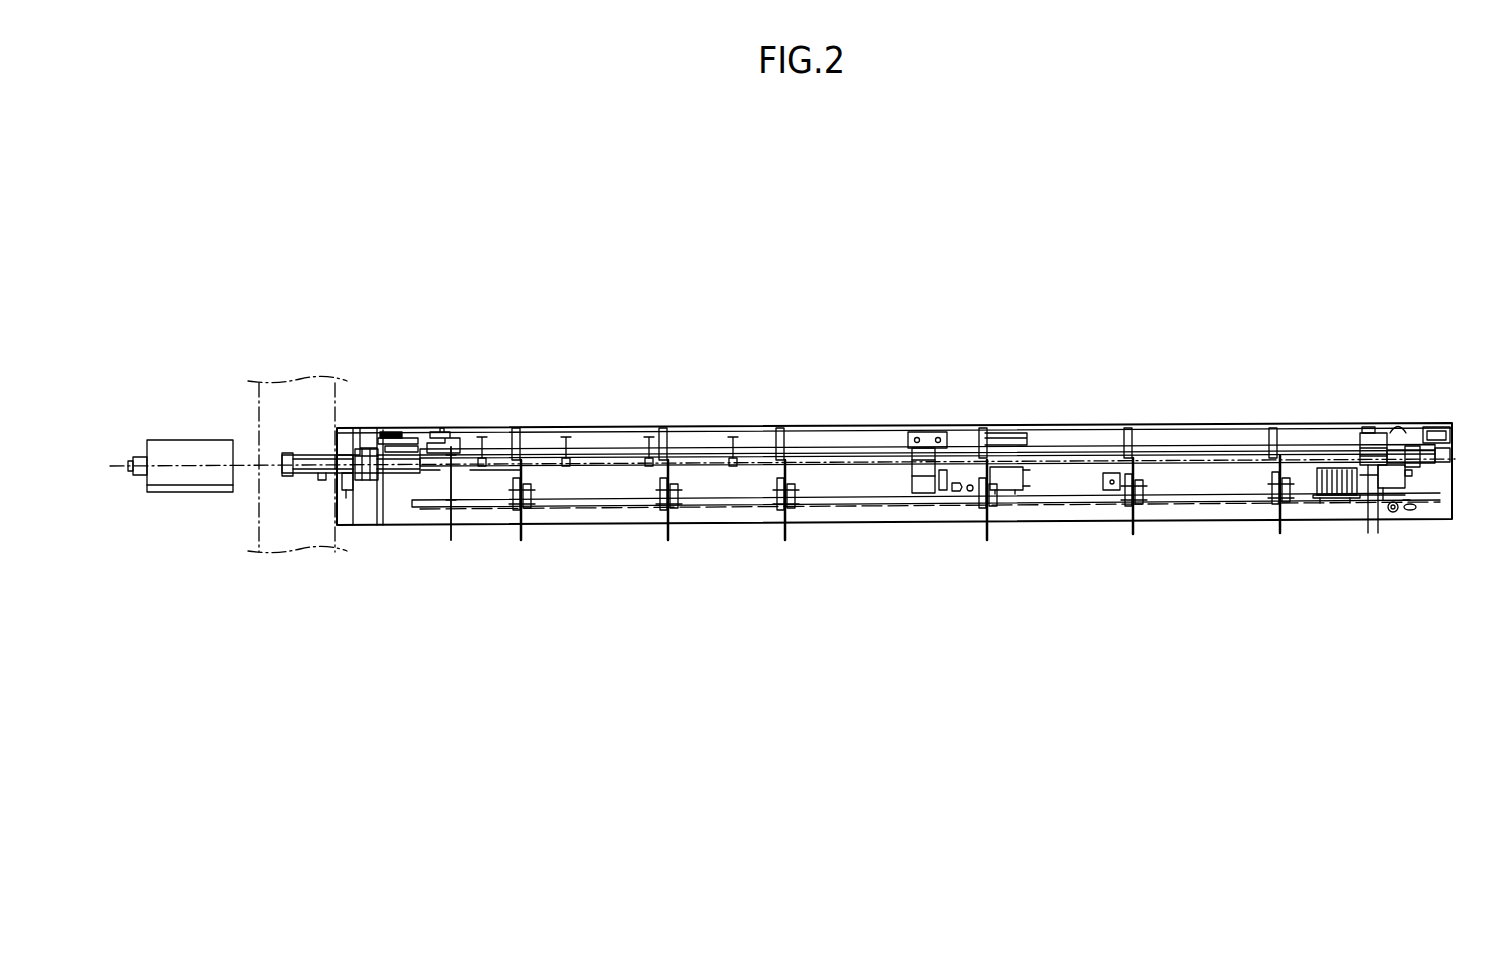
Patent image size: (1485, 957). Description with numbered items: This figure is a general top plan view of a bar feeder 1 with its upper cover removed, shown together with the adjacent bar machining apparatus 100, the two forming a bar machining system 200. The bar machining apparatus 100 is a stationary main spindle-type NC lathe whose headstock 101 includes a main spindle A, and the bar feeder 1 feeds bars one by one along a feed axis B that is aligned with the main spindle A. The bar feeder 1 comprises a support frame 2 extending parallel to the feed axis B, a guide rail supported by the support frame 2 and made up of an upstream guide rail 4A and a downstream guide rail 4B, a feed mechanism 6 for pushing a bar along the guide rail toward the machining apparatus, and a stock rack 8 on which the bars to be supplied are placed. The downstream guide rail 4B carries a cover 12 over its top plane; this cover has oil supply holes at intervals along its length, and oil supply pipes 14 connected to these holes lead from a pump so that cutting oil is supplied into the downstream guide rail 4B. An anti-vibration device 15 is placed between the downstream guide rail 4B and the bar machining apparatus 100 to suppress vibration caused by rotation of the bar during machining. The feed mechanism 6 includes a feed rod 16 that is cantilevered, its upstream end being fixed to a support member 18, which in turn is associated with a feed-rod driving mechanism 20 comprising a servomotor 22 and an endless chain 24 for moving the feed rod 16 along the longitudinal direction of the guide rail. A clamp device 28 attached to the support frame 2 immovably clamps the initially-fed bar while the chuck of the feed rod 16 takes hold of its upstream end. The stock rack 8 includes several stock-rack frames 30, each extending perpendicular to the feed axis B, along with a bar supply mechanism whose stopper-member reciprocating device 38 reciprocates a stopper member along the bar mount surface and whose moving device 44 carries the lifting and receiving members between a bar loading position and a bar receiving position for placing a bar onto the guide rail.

The bar machining system 200 is at (972, 260).
The bar feeder 1 is at (880, 400).
The support frame 2 is at (1190, 434).
The upstream guide rail 4A is at (1052, 460).
The downstream guide rail 4B is at (760, 447).
The cover 12 is at (597, 452).
The oil supply pipes 14 is at (553, 447).
The anti-vibration device 15 is at (308, 460).
The servomotor 22 is at (363, 480).
The endless chain 24 is at (373, 440).
The feed-rod driving mechanism 20 is at (412, 428).
The stock-rack frames 30 is at (668, 530).
The stock rack 8 is at (1128, 523).
The clamp device 28 is at (915, 493).
The moving device 44 is at (1097, 488).
The feed rod 16 is at (1290, 458).
The support member 18 is at (1360, 447).
The feed mechanism 6 is at (1377, 414).
The stopper-member reciprocating device 38 is at (1406, 488).
The bar machining apparatus 100 is at (225, 370).
The headstock 101 is at (188, 455).
The main spindle A is at (118, 466).
The feed axis B is at (1455, 462).